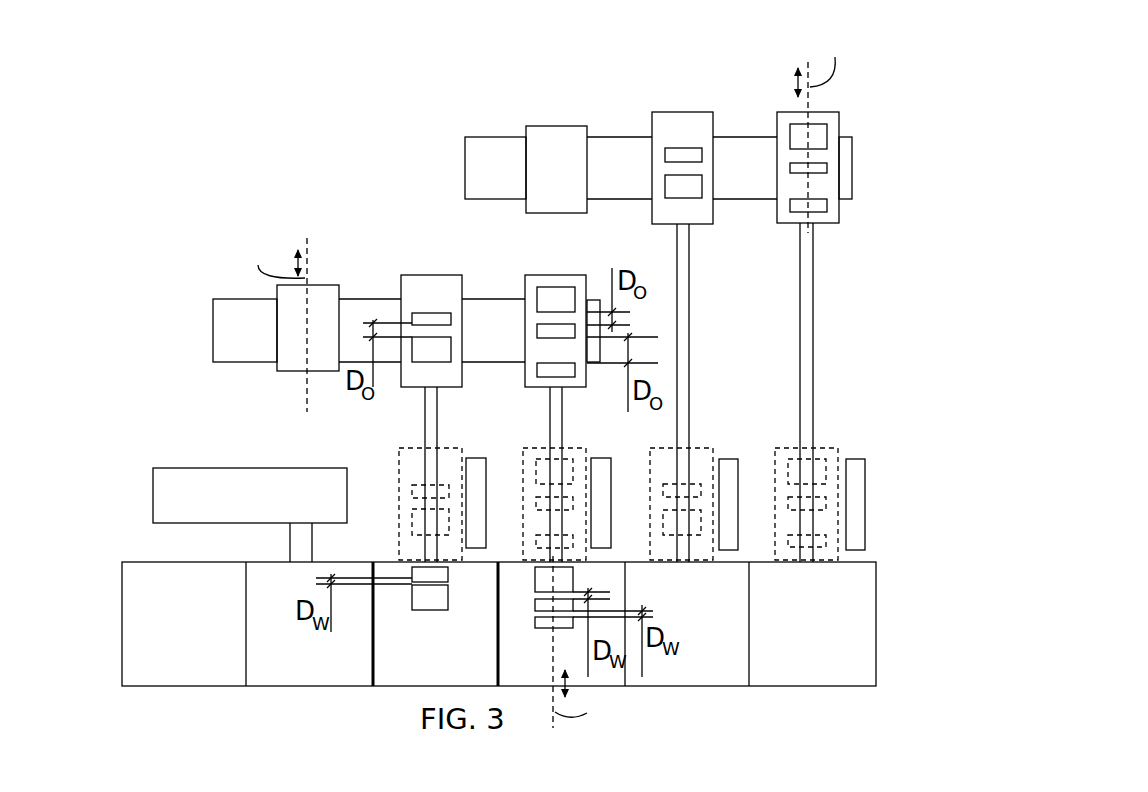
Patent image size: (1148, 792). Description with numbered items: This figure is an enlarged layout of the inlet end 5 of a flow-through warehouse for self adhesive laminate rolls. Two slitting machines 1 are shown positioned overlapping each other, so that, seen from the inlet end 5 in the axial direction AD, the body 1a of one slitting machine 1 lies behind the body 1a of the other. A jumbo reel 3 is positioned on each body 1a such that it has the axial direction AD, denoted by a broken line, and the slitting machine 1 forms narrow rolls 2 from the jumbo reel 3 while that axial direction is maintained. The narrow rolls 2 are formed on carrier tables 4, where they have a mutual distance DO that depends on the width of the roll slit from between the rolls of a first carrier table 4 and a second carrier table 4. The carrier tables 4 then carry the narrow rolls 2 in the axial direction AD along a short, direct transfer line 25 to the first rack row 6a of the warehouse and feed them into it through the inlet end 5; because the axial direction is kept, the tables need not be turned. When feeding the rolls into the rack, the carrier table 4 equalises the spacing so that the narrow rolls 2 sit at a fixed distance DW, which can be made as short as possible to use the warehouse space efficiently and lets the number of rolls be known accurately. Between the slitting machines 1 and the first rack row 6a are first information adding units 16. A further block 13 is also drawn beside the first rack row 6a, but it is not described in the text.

The slitting machine 1 is at (333, 212).
The body of the slitting machine 1a is at (232, 328).
The narrow roll 2 is at (437, 319).
The jumbo reel 3 is at (325, 300).
The carrier table 4 is at (452, 283).
The inlet end of the flow-through warehouse 5 is at (849, 440).
The first rack row 6a is at (118, 623).
The drive unit 13 is at (207, 500).
The first information adding unit 16 is at (475, 470).
The transfer line 25 is at (805, 307).